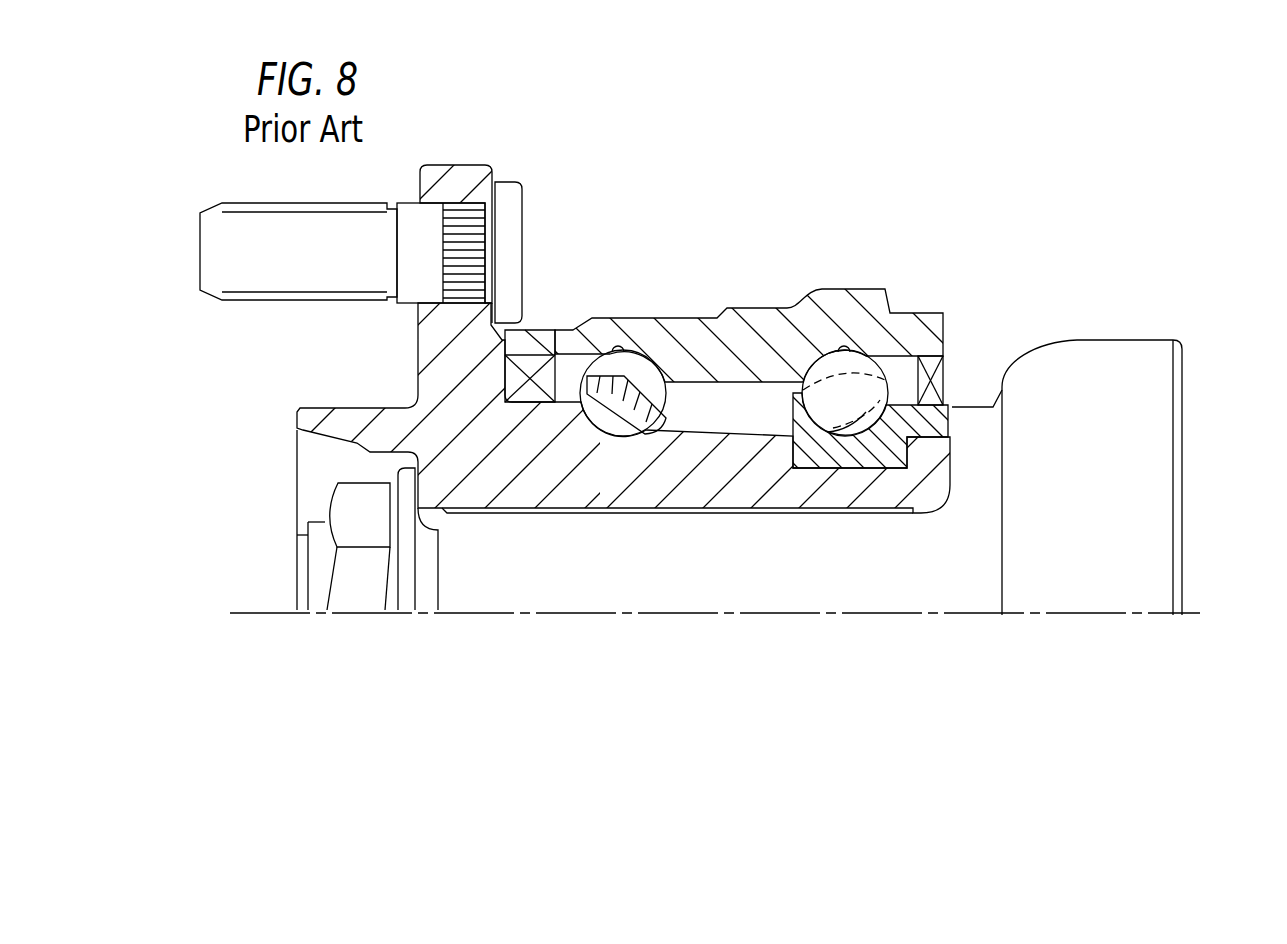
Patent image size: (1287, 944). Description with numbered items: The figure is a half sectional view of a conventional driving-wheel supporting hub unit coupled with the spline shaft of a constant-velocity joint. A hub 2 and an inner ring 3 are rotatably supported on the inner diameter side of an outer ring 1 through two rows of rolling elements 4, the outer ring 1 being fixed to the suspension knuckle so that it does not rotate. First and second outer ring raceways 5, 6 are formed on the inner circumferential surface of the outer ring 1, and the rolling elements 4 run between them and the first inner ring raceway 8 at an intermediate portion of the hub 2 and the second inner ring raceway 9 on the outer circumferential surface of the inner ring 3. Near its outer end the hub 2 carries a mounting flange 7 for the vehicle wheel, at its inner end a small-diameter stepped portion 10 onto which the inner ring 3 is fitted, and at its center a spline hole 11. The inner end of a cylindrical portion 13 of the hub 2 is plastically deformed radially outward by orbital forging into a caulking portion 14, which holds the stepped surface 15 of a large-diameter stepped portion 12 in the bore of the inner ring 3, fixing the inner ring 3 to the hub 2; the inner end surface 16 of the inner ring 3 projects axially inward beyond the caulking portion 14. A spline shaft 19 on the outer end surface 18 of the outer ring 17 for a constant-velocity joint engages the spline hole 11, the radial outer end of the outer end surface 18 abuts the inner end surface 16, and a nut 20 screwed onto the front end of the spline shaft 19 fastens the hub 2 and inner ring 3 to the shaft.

The outer ring 1 is at (699, 330).
The hub 2 is at (420, 415).
The inner ring 3 is at (906, 397).
The rolling elements 4 is at (643, 362).
The first outer ring raceway 5 is at (619, 352).
The second outer ring raceway 6 is at (847, 352).
The mounting flange 7 is at (457, 178).
The first inner ring raceway 8 is at (610, 425).
The second inner ring raceway 9 is at (841, 415).
The small-diameter stepped portion 10 is at (823, 457).
The spline hole 11 is at (700, 512).
The large-diameter stepped portion 12 is at (950, 458).
The cylindrical portion 13 is at (882, 493).
The caulking portion 14 is at (945, 462).
The stepped surface 15 is at (917, 497).
The inner end surface 16 is at (975, 407).
The outer ring for a constant-velocity joint 17 is at (1073, 370).
The outer end surface 18 is at (950, 395).
The spline shaft 19 is at (486, 572).
The nut 20 is at (350, 577).